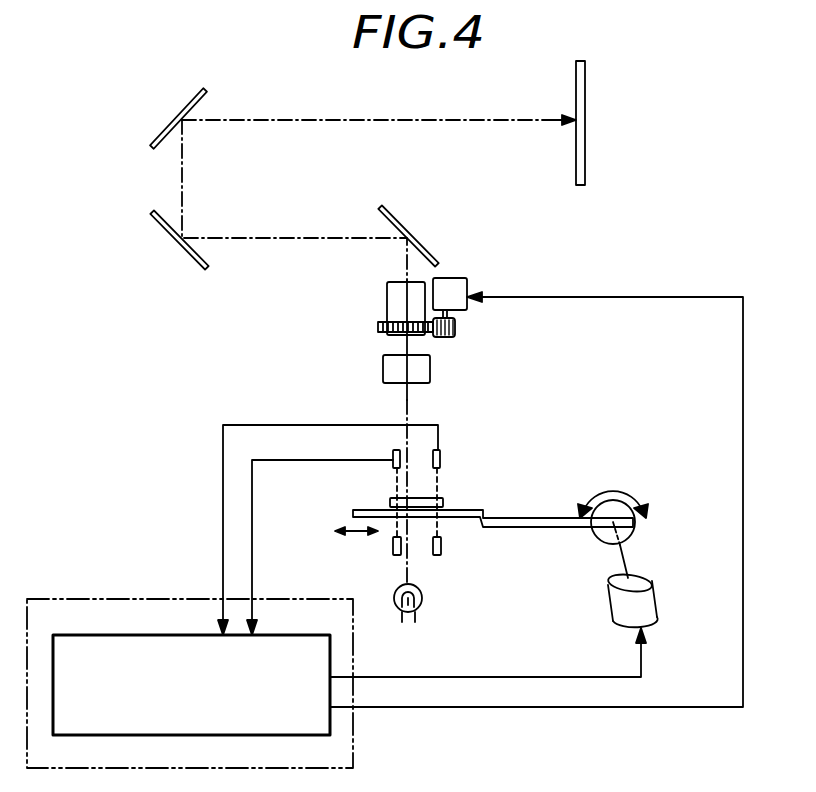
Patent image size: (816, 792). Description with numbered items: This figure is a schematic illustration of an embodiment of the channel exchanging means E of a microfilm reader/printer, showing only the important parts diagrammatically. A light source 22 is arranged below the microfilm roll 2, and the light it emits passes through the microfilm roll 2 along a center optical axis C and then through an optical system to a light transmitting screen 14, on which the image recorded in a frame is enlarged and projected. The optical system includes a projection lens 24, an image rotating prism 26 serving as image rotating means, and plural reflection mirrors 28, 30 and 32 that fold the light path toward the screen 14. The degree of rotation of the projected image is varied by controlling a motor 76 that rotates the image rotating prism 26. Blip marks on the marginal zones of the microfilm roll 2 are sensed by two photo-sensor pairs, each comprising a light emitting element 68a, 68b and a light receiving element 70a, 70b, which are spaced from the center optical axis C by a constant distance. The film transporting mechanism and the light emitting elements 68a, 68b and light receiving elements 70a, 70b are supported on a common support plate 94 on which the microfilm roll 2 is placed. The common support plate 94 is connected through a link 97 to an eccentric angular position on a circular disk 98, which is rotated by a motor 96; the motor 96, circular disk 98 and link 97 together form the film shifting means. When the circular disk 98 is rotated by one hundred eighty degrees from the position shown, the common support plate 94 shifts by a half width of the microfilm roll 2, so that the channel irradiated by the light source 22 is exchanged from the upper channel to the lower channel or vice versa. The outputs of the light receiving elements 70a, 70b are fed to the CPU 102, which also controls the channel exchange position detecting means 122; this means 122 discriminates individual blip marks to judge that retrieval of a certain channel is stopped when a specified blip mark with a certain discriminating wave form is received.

The light transmitting screen 14 is at (585, 95).
The reflection mirror 32 is at (180, 112).
The reflection mirror 30 is at (173, 242).
The reflection mirror 28 is at (405, 225).
The image rotating prism 26 is at (387, 302).
The motor 76 is at (455, 278).
The center optical axis C is at (397, 345).
The projection lens 24 is at (383, 375).
The light receiving element 70a is at (393, 465).
The light receiving element 70b is at (447, 453).
The light emitting element 68a is at (393, 550).
The light emitting element 68b is at (441, 560).
The microfilm roll 2 is at (441, 500).
The common support plate 94 is at (482, 508).
The channel exchanging means E is at (548, 470).
The link 97 is at (542, 517).
The circular disk 98 is at (600, 542).
The motor 96 is at (608, 608).
The light source 22 is at (422, 597).
The CPU 102 is at (197, 598).
The channel exchange position detecting means 122 is at (267, 633).